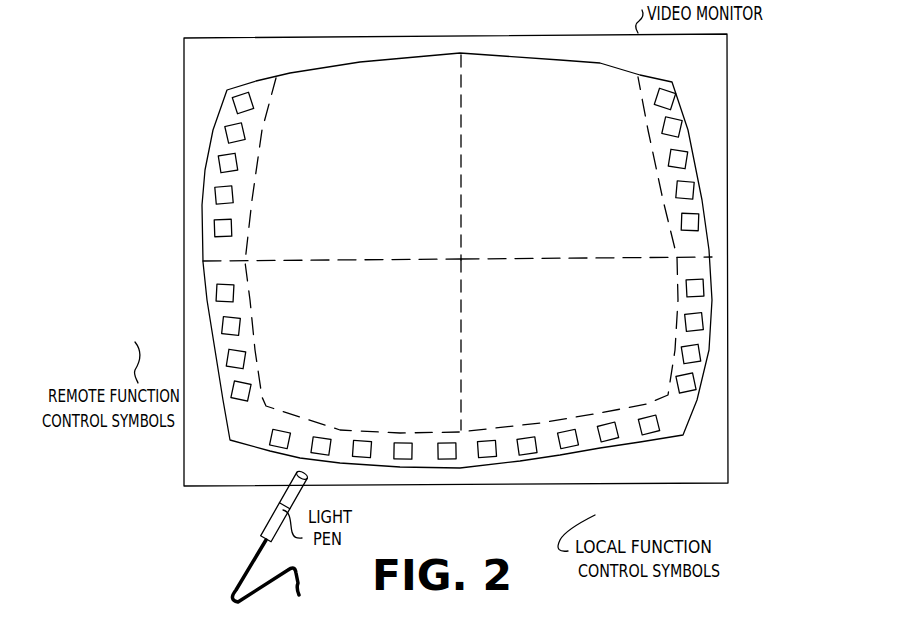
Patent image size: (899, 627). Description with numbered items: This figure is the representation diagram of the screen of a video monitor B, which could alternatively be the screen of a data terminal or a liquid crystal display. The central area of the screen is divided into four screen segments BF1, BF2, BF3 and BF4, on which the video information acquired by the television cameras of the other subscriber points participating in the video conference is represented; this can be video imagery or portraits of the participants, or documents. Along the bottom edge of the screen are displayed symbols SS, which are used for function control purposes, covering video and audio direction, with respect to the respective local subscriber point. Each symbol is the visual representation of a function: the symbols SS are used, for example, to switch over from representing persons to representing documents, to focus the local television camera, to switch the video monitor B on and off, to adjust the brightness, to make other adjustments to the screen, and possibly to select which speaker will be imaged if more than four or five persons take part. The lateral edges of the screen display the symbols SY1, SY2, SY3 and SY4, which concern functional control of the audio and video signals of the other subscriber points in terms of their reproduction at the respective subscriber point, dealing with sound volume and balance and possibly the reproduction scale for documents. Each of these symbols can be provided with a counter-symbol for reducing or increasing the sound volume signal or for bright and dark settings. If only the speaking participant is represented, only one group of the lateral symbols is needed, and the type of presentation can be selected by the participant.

The video monitor B is at (705, 72).
The lateral-edge symbol SY1 is at (234, 136).
The lateral-edge symbol SY2 is at (687, 192).
The lateral-edge symbol SY3 is at (235, 358).
The lateral-edge symbol SY4 is at (697, 287).
The bottom-edge symbols SS is at (650, 430).
The screen segment BF1 is at (393, 157).
The screen segment BF2 is at (586, 216).
The screen segment BF3 is at (332, 301).
The screen segment BF4 is at (510, 345).